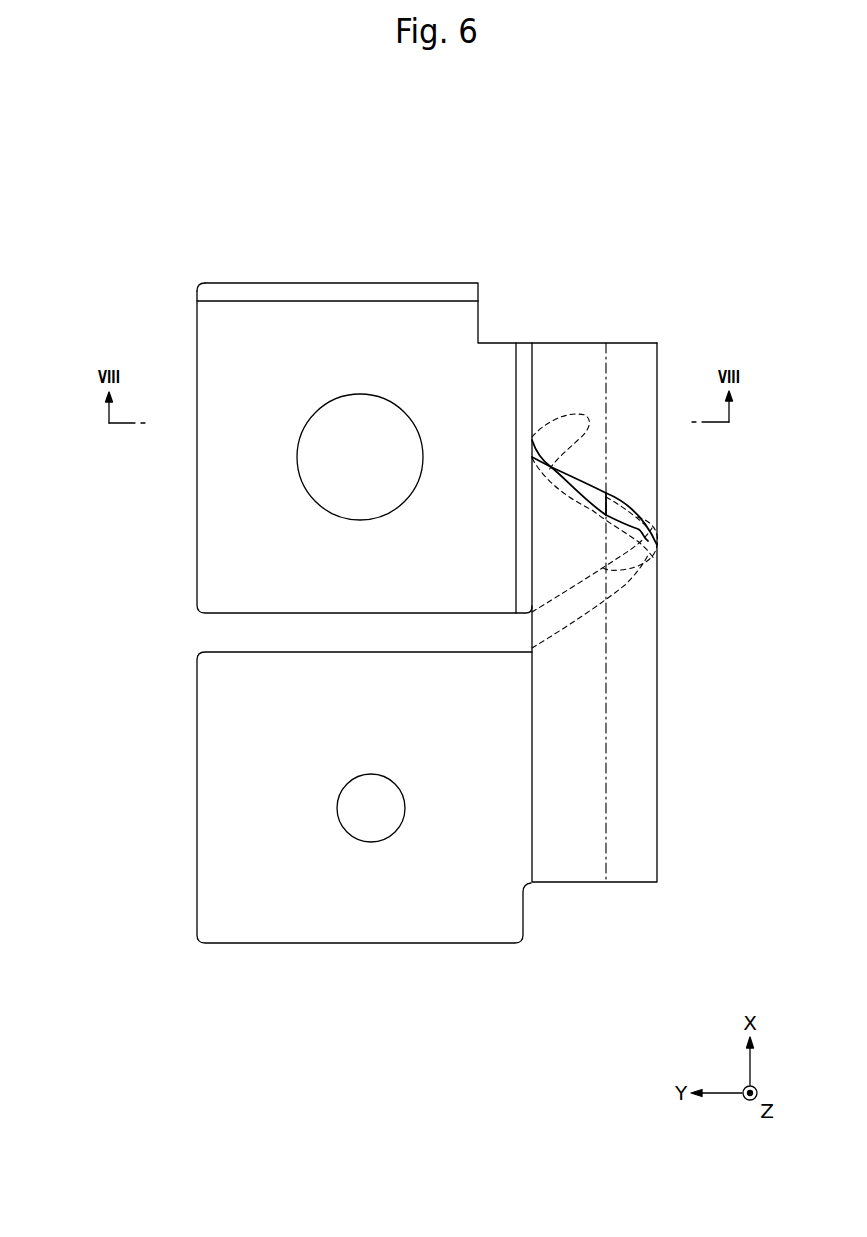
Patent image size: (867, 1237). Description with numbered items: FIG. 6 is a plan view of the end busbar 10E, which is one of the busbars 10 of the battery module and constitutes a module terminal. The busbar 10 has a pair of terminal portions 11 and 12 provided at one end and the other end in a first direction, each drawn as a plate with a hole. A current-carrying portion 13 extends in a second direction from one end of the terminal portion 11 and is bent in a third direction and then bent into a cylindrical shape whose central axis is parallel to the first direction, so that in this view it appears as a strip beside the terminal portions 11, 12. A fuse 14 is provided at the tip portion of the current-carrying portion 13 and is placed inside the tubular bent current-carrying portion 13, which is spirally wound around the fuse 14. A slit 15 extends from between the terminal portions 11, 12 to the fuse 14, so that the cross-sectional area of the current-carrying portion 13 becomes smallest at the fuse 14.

The end busbar 10E is at (194, 196).
The busbar 10 is at (473, 614).
The terminal portion 11 is at (346, 945).
The terminal portion 12 is at (350, 283).
The current-carrying portion 13 is at (661, 745).
The fuse 14 is at (610, 419).
The slit 15 is at (642, 503).